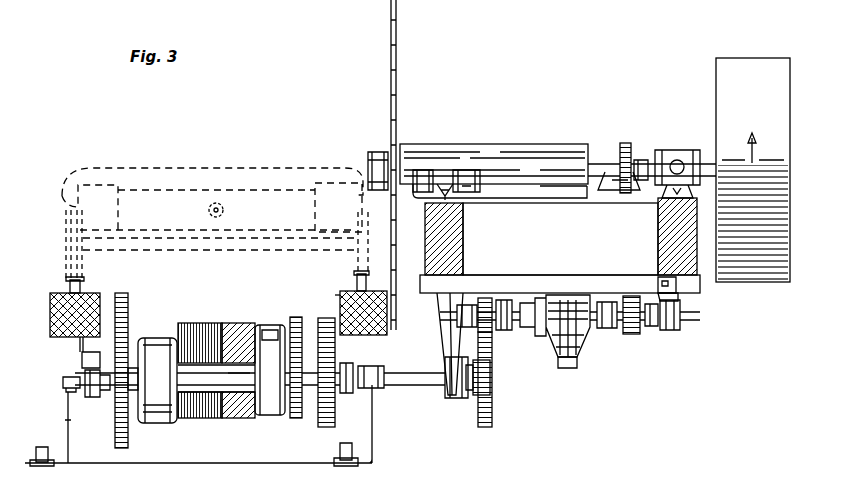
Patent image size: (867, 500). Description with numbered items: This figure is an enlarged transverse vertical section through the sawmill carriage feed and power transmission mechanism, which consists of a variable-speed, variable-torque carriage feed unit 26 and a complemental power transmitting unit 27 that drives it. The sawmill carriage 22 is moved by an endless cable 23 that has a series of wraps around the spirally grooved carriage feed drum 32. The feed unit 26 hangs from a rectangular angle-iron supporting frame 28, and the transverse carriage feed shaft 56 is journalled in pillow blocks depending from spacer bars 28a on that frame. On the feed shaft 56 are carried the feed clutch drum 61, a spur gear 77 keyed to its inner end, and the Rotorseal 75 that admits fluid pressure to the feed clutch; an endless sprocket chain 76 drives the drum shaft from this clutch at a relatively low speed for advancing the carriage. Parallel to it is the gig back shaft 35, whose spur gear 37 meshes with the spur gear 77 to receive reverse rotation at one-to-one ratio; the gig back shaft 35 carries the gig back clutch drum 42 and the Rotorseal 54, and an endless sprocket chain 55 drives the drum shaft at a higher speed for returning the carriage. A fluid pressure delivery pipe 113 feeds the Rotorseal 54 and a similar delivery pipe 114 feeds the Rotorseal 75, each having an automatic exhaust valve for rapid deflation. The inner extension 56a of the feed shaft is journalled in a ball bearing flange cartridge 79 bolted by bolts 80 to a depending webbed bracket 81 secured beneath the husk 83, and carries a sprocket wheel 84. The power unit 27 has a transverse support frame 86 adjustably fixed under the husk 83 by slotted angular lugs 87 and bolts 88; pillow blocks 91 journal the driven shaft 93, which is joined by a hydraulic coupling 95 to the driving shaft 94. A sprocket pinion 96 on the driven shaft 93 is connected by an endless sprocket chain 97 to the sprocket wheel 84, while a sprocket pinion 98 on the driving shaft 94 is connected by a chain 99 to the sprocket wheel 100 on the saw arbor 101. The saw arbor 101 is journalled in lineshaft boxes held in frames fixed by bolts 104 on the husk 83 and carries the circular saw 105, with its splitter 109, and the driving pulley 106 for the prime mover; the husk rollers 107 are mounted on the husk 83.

The sawmill carriage 22 is at (205, 188).
The endless cable 23 is at (242, 418).
The sawmill carriage feed unit 26 is at (258, 428).
The power transmitting unit 27 is at (590, 365).
The supporting frame 28 is at (80, 347).
The spacer bars 28a is at (82, 360).
The carriage feed drum 32 is at (184, 323).
The gig back shaft 35 is at (218, 333).
The spur gear 37 is at (342, 310).
The gig back clutch drum 42 is at (268, 325).
The Rotorseal 54 is at (372, 368).
The endless sprocket chain 55 is at (297, 418).
The carriage feed shaft 56 is at (205, 412).
The feed shaft extension 56a is at (418, 373).
The feed clutch drum 61 is at (160, 410).
The Rotorseal 75 is at (63, 382).
The endless sprocket chain 76 is at (116, 440).
The spur gear 77 is at (333, 412).
The ball bearing flange cartridge 79 is at (468, 398).
The bolts 80 is at (448, 395).
The webbed bracket 81 is at (447, 307).
The husk 83 is at (560, 245).
The sprocket wheel 84 is at (492, 385).
The support frame 86 is at (565, 293).
The slotted angular lugs 87 is at (680, 296).
The bolts 88 is at (662, 285).
The ball bearing pillow blocks 91 is at (505, 330).
The driven shaft 93 is at (455, 330).
The driving shaft 94 is at (652, 326).
The hydraulic coupling 95 is at (568, 368).
The sprocket pinion 96 is at (490, 330).
The endless sprocket chain 97 is at (493, 408).
The sprocket pinion 98 is at (636, 334).
The endless sprocket chain 99 is at (628, 143).
The sprocket wheel 100 is at (638, 160).
The saw arbor 101 is at (606, 164).
The bolts 104 is at (472, 197).
The circular saw 105 is at (390, 30).
The driving pulley 106 is at (748, 75).
The husk rollers 107 is at (518, 145).
The splitter 109 is at (390, 138).
The fluid pressure delivery pipe 113 is at (178, 465).
The fluid pressure delivery pipe 114 is at (66, 408).